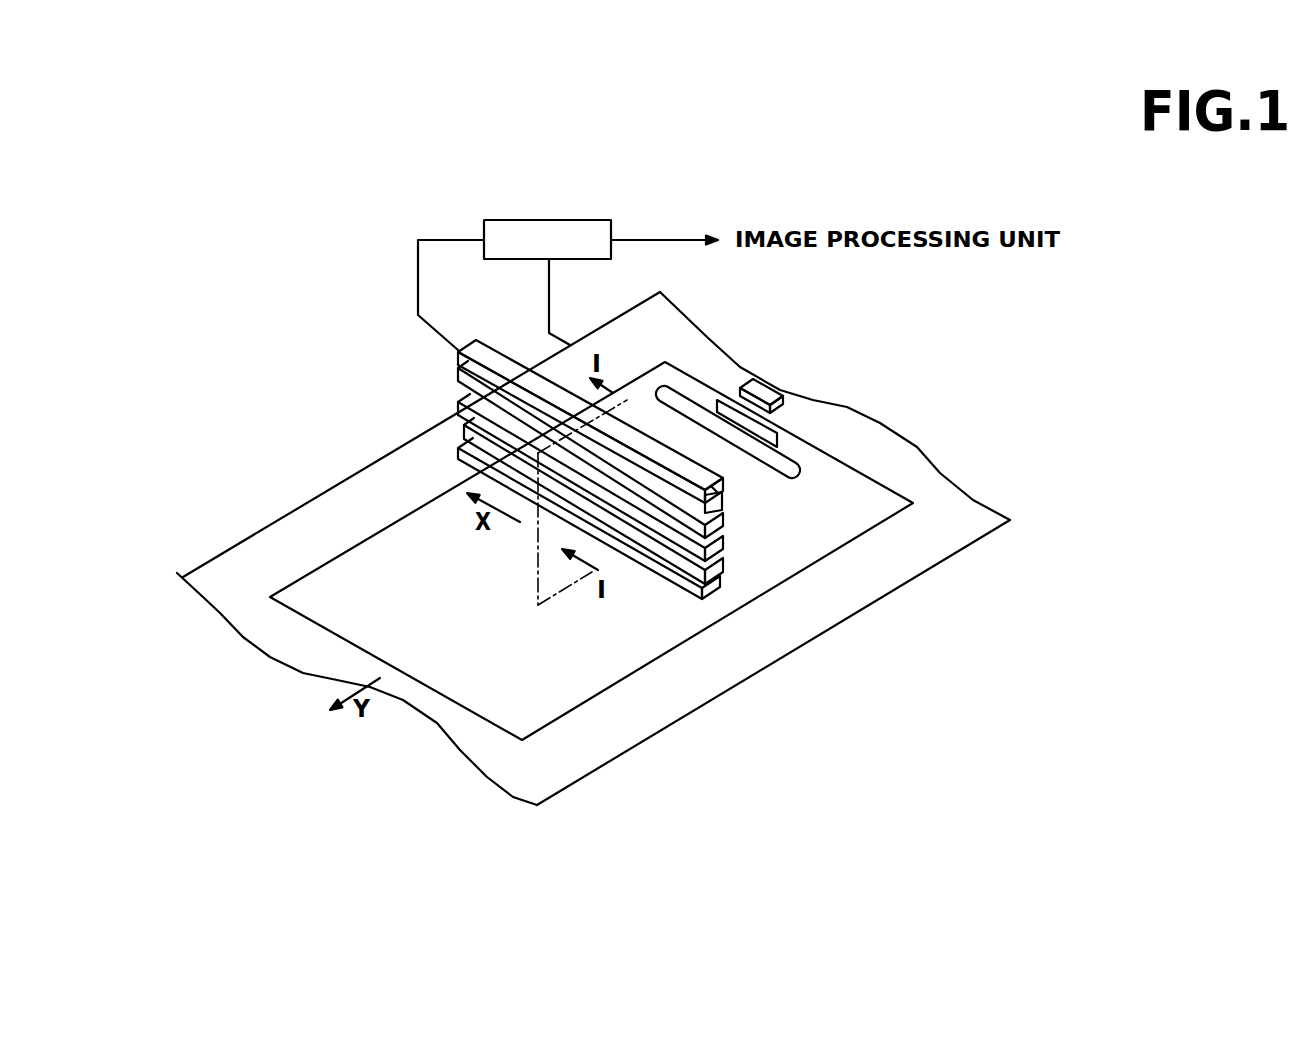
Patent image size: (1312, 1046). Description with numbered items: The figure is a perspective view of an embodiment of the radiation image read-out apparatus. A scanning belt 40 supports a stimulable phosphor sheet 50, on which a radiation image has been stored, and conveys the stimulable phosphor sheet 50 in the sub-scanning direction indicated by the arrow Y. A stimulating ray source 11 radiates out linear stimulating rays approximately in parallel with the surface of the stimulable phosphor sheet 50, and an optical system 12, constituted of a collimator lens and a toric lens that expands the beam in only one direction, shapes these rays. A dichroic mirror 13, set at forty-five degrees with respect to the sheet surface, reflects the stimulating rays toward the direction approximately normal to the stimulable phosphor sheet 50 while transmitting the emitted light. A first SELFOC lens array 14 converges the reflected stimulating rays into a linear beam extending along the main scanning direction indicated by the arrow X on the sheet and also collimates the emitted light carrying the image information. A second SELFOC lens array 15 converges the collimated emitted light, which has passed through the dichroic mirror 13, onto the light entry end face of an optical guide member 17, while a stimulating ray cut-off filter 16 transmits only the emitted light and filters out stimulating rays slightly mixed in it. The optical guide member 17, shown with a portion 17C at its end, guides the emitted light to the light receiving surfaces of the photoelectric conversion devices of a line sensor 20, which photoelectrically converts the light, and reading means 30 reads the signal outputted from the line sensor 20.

The stimulating ray source 11 is at (745, 379).
The optical system 12 is at (798, 442).
The dichroic mirror 13 is at (723, 558).
The first SELFOC lens array 14 is at (715, 598).
The second SELFOC lens array 15 is at (727, 537).
The stimulating ray cut-off filter 16 is at (720, 527).
The optical guide member 17 is at (722, 515).
The cutout portion 17C is at (720, 505).
The line sensor 20 is at (654, 466).
The reading means 30 is at (538, 220).
The scanning belt 40 is at (880, 427).
The stimulable phosphor sheet 50 is at (590, 683).